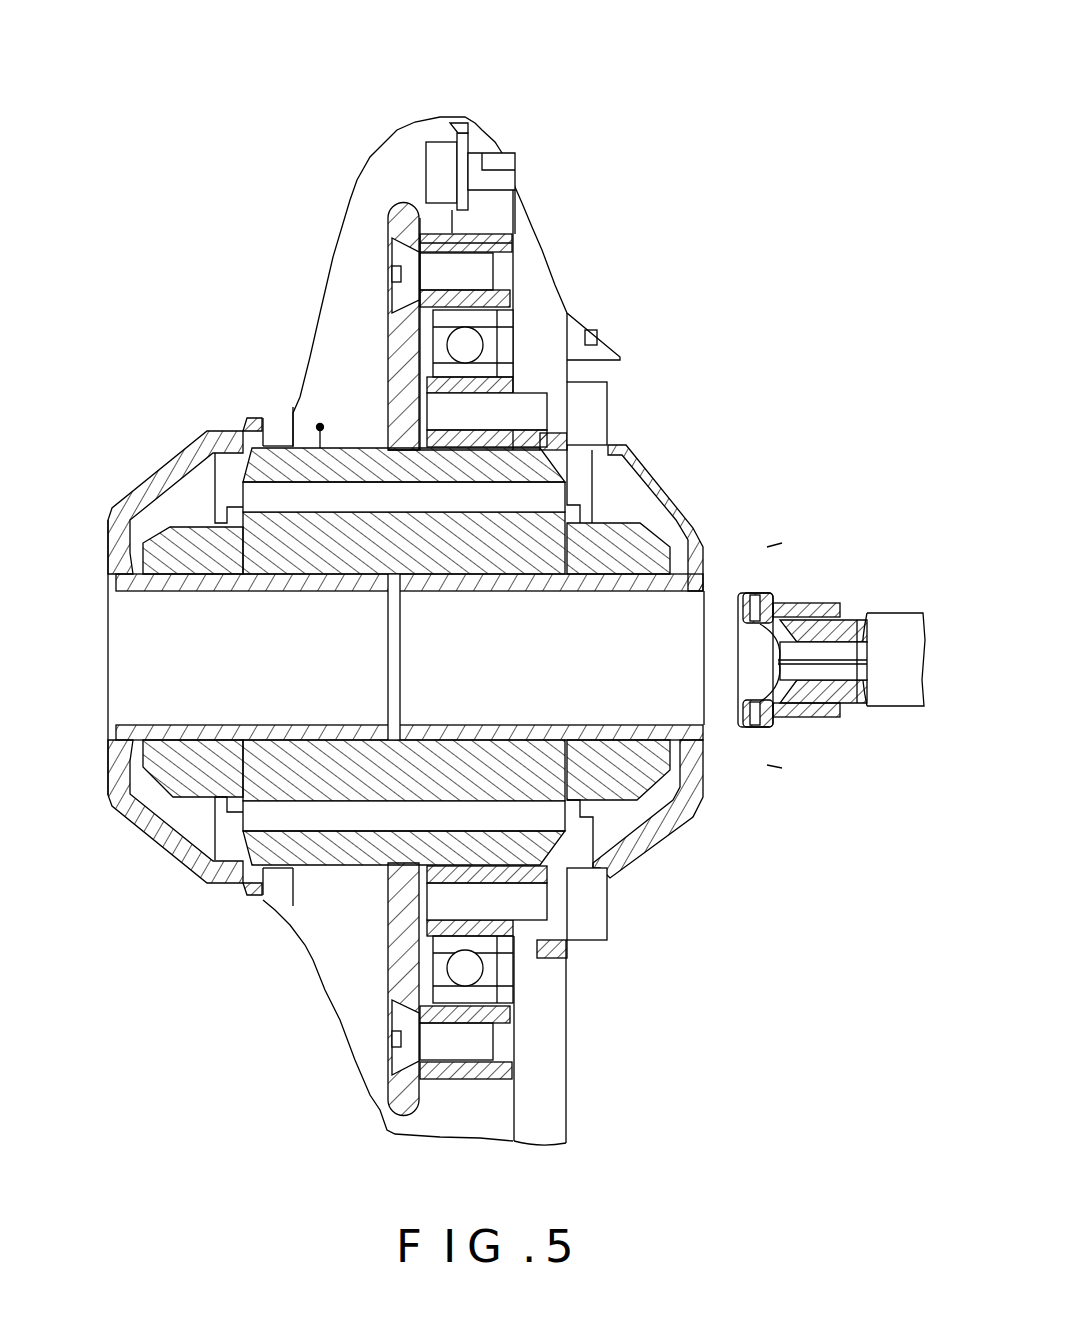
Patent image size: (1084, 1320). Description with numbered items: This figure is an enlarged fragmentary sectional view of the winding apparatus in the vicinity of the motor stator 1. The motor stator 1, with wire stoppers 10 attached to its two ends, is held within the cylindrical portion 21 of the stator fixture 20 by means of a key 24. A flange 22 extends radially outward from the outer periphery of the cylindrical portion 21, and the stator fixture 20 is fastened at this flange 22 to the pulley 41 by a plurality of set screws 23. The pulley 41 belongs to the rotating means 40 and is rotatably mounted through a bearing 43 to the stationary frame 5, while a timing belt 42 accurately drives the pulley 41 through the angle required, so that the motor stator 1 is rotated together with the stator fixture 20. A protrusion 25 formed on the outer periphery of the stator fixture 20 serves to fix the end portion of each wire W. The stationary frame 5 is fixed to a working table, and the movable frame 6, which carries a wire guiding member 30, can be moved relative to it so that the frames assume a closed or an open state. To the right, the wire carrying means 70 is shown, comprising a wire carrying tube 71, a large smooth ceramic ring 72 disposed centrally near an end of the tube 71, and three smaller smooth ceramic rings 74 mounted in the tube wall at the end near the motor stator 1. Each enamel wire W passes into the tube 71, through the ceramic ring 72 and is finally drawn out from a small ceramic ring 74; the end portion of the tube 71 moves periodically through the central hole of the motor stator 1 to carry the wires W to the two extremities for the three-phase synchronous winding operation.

The motor stator 1 is at (530, 553).
The stationary frame 5 is at (567, 313).
The movable frame 6 is at (316, 424).
The wire stopper 10 is at (187, 780).
The stator fixture 20 is at (378, 440).
The cylindrical portion 21 is at (357, 463).
The flange 22 is at (388, 337).
The set screws 23 is at (395, 205).
The key 24 is at (540, 497).
The protrusion 25 is at (297, 407).
The wire guiding member 30 is at (183, 467).
The rotating means 40 is at (473, 217).
The pulley 41 is at (495, 295).
The timing belt 42 is at (493, 235).
The bearing 43 is at (545, 335).
The wire carrying means 70 is at (827, 645).
The wire carrying tube 71 is at (885, 700).
The large smooth ceramic ring 72 is at (840, 637).
The small smooth ceramic rings 74 is at (767, 593).
The enamel wires W is at (763, 583).